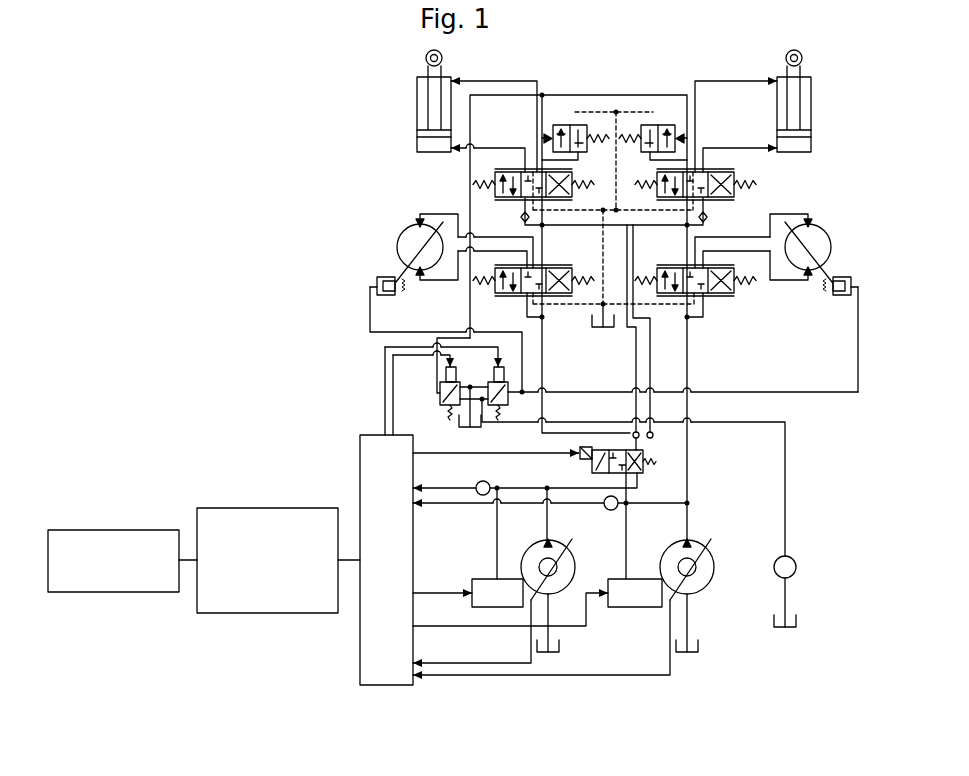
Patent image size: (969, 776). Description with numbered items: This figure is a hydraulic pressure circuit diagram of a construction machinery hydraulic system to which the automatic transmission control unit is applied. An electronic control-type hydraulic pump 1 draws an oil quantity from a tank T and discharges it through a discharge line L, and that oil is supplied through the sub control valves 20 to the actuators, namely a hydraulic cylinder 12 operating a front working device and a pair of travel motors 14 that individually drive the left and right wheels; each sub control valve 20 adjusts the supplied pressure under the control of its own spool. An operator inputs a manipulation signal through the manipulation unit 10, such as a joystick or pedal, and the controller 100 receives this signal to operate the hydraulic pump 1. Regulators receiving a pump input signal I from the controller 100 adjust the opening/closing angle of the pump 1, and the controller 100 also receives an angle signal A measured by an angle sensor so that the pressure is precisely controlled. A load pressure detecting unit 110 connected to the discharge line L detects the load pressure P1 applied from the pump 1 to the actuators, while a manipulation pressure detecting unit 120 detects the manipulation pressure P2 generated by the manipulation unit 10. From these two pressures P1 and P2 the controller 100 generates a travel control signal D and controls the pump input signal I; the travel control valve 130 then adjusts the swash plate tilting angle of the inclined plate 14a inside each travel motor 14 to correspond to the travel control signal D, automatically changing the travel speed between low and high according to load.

The electronic control-type hydraulic pump 1 is at (573, 551).
The manipulation unit 10 is at (145, 592).
The hydraulic cylinder 12 is at (417, 85).
The travel motor 14 is at (418, 226).
The inclined plate 14a is at (401, 235).
The sub control valve 20 is at (742, 302).
The controller 100 is at (384, 685).
The load pressure detecting unit 110 is at (604, 501).
The manipulation pressure detecting unit 120 is at (287, 613).
The travel control valve 130 is at (430, 386).
The travel control signal D is at (386, 406).
The load pressure P1 is at (447, 487).
The manipulation pressure P2 is at (348, 549).
The discharge line L is at (546, 521).
The tank T is at (562, 644).
The angle signal A is at (490, 668).
The pump input signal I is at (434, 598).